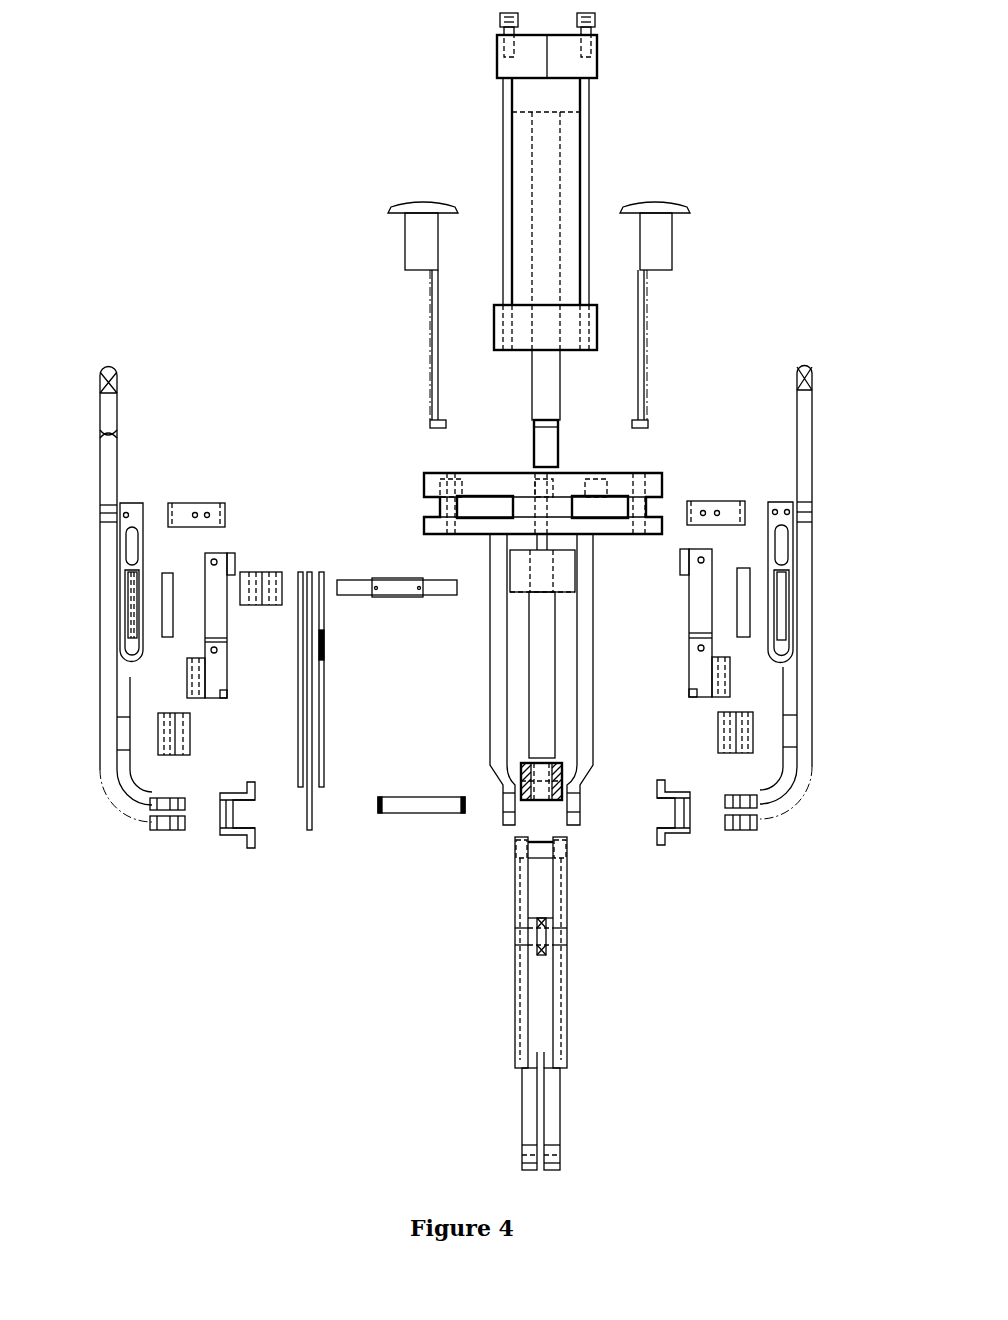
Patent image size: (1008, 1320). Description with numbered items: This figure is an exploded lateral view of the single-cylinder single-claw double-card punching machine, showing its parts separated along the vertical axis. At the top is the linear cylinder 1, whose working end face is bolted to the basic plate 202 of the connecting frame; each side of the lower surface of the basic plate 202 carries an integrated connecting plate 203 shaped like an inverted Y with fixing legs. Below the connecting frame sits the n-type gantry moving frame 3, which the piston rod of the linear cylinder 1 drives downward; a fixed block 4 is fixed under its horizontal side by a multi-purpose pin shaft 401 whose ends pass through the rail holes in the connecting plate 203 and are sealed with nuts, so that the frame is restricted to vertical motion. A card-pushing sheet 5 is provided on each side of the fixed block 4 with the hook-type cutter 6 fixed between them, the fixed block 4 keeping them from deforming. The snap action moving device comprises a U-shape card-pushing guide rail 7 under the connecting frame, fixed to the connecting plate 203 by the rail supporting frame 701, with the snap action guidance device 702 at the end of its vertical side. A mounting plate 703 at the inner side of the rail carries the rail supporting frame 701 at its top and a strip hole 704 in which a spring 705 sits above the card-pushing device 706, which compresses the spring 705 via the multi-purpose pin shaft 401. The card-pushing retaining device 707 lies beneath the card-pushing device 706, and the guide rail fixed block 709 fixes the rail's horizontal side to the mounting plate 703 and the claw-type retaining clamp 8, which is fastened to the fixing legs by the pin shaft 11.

The linear cylinder 1 is at (545, 147).
The snap action guidance device 702 is at (415, 220).
The U-shape card-pushing guide rail 7 is at (115, 387).
The mounting plate 703 is at (133, 517).
The strip hole 704 is at (137, 573).
The spring 705 is at (172, 566).
The rail supporting frame 701 is at (217, 503).
The card-pushing device 706 is at (218, 563).
The card-pushing retaining device 707 is at (185, 733).
The guide rail fixed block 709 is at (255, 838).
The fixed block 4 is at (268, 576).
The multi-purpose pin shaft 401 is at (347, 597).
The hook-type cutter 6 is at (313, 635).
The card-pushing sheet 5 is at (323, 697).
The pin shaft 11 is at (422, 803).
The basic plate 202 is at (467, 484).
The connecting plate 203 is at (489, 600).
The n-type gantry moving frame 3 is at (543, 706).
The retaining clamp 8 is at (530, 1027).